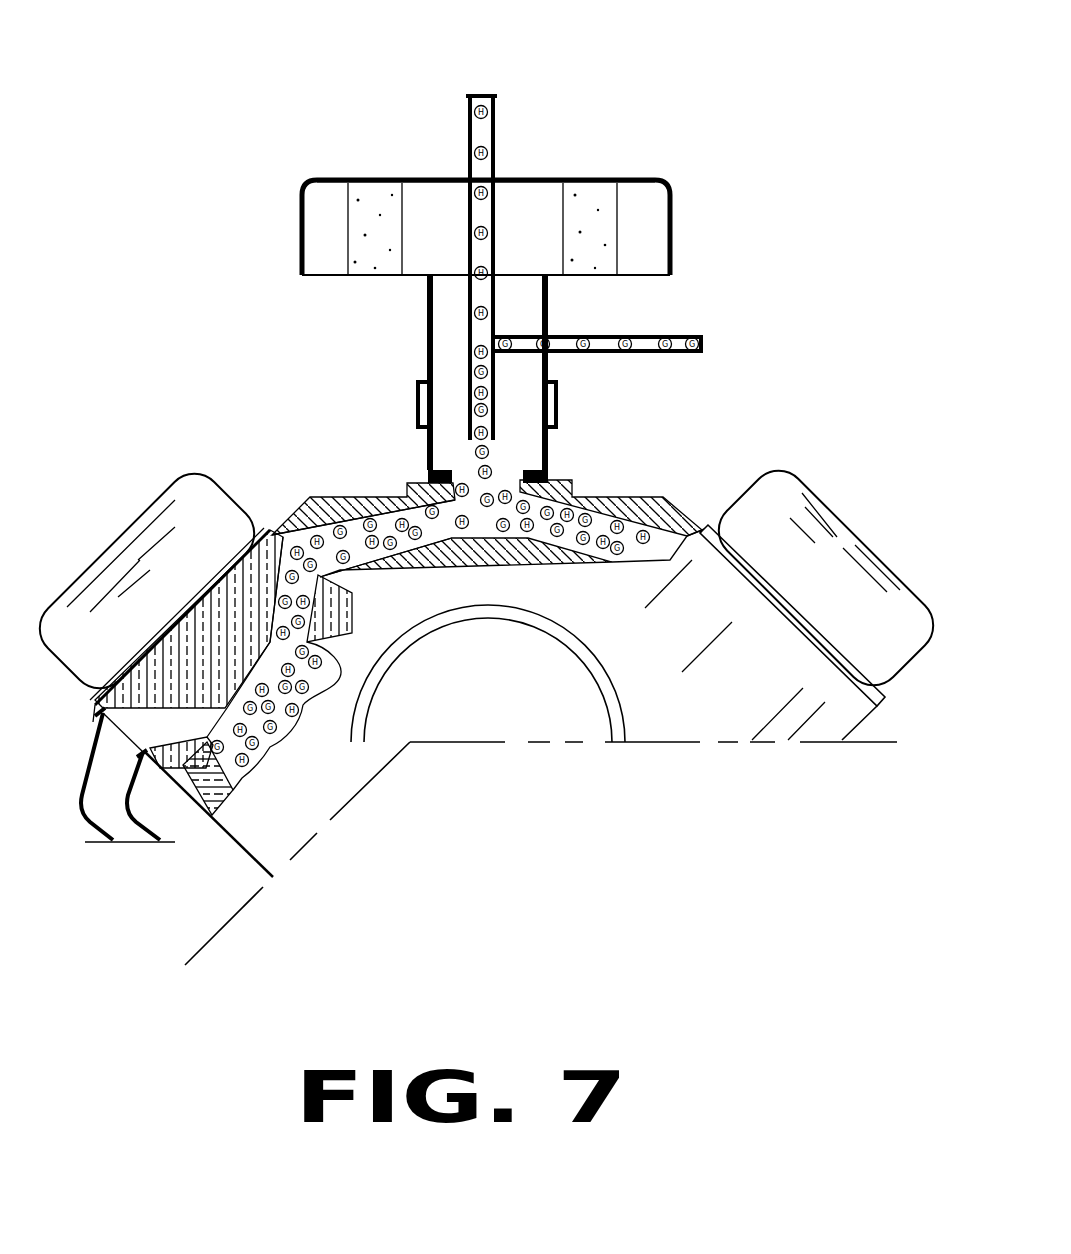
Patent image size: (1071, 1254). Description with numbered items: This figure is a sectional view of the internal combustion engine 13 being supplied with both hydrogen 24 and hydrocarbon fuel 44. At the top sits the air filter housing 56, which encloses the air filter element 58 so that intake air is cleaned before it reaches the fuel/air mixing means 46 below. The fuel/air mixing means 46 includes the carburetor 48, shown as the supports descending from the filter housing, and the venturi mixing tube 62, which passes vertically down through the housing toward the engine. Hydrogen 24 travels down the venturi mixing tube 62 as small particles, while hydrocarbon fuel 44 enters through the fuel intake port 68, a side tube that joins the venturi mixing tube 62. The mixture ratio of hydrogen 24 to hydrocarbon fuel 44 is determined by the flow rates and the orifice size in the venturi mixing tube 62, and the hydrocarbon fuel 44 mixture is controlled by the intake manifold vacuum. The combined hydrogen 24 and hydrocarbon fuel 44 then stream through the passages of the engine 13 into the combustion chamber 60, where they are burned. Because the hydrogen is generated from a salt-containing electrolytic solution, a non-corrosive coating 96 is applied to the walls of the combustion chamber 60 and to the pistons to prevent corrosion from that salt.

The internal combustion engine 13 is at (690, 452).
The hydrogen molecules 24 is at (378, 540).
The hydrocarbon fuel 44 is at (617, 550).
The fuel/air mixing means 46 is at (629, 225).
The carburetor 48 is at (423, 303).
The air filter housing 56 is at (330, 179).
The air filter element 58 is at (628, 180).
The combustion chamber 60 is at (215, 850).
The venturi mixing tube 62 is at (492, 158).
The fuel intake port 68 is at (668, 313).
The non-corrosive coating 96 is at (322, 662).